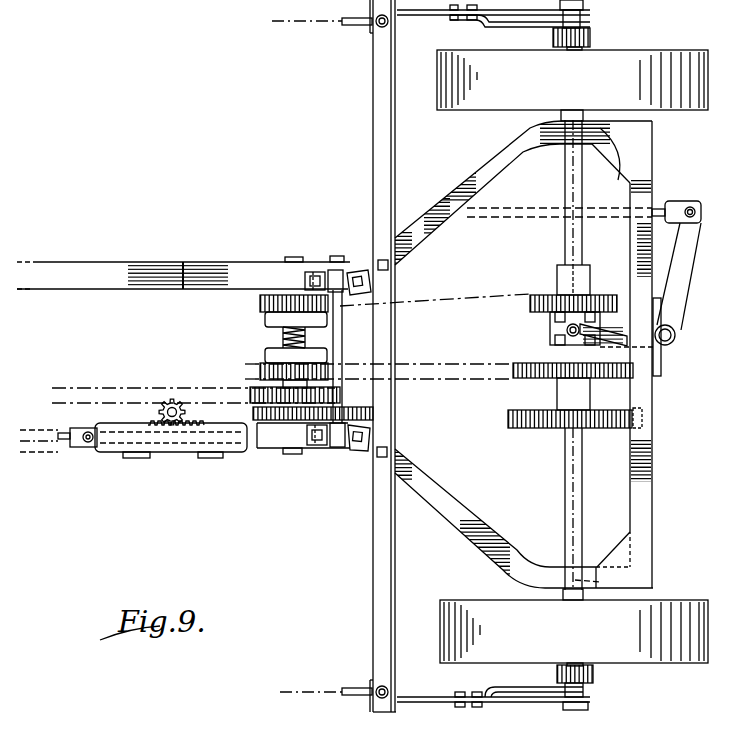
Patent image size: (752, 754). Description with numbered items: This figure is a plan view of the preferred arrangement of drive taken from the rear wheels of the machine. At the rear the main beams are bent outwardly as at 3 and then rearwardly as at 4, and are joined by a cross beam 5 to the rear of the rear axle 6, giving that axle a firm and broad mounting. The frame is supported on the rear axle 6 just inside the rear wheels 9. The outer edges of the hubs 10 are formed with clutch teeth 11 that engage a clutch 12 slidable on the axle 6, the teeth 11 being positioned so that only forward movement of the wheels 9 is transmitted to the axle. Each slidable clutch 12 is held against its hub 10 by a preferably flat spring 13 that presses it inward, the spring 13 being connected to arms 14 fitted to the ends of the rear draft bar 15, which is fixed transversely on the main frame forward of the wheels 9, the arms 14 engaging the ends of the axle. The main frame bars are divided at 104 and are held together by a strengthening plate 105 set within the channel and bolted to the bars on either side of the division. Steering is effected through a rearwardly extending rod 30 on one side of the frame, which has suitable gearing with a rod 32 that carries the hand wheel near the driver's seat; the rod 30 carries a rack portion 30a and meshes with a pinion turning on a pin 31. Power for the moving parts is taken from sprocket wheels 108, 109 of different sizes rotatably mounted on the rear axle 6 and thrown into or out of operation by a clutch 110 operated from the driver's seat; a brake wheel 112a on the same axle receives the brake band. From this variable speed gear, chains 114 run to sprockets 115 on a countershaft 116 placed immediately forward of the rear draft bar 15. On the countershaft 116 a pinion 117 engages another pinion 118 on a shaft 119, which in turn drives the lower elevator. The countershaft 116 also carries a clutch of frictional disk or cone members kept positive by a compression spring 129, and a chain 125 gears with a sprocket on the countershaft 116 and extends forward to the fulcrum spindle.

The outward bend 3 is at (492, 168).
The rearward bend 4 is at (628, 132).
The cross beam 5 is at (645, 497).
The rear axle 6 is at (583, 243).
The rear wheels 9 is at (572, 356).
The hubs 10 is at (553, 38).
The clutch teeth 11 is at (590, 45).
The clutch 12 is at (585, 32).
The spring 13 is at (474, 20).
The arms 14 is at (424, 18).
The rear draft bar 15 is at (372, 146).
The rod 30 is at (66, 452).
The rack bar 30a is at (122, 430).
The pinion pin 31 is at (165, 405).
The rod 32 is at (173, 400).
The division 104 is at (186, 282).
The strengthening plate 105 is at (163, 262).
The sprocket wheel 108 is at (521, 376).
The sprocket wheel 109 is at (548, 298).
The clutch 110 is at (550, 320).
The brake wheel 112a is at (536, 429).
The chains 114 is at (430, 294).
The sprockets 115 is at (264, 306).
The countershaft 116 is at (294, 455).
The pinion 117 is at (272, 426).
The pinion 118 is at (374, 414).
The shaft 119 is at (343, 342).
The chain 125 is at (76, 388).
The spring 129 is at (283, 337).